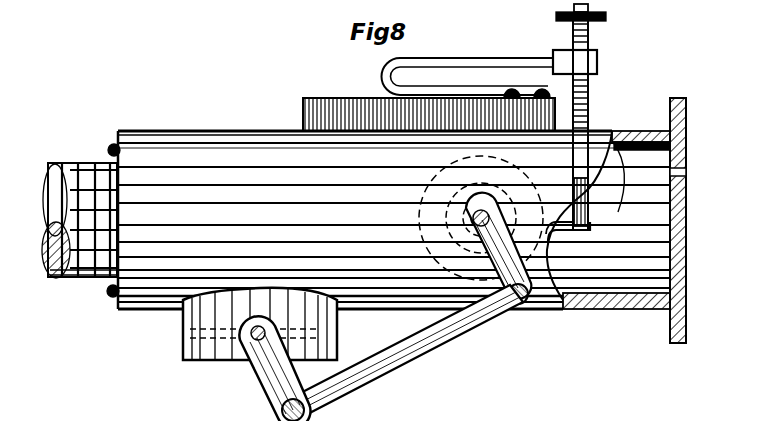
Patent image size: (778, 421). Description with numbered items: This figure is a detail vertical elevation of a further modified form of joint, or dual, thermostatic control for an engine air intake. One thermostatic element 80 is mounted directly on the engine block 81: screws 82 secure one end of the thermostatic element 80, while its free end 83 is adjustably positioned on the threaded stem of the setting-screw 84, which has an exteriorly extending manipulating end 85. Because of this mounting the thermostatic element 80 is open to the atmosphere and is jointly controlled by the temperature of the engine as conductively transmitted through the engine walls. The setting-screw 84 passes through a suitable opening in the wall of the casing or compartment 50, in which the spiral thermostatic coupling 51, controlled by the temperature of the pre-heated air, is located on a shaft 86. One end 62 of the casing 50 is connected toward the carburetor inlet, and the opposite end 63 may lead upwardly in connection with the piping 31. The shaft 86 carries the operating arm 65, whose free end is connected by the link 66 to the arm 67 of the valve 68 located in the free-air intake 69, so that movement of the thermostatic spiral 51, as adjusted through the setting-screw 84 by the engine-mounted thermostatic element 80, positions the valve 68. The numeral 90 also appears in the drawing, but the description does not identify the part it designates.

The piping 31 is at (82, 195).
The casing 50 is at (614, 132).
The spiral thermostatic coupling 51 is at (440, 230).
The end of the casing 62 is at (686, 134).
The opposite end of the casing 63 is at (119, 162).
The operating arm 65 is at (560, 267).
The link 66 is at (446, 338).
The arm of the valve 67 is at (276, 396).
The valve 68 is at (230, 355).
The free-air intake 69 is at (198, 358).
The thermostatic element 80 is at (456, 60).
The engine block 81 is at (370, 118).
The screws 82 is at (528, 92).
The free end of the thermostatic element 83 is at (556, 68).
The setting-screw 84 is at (592, 98).
The manipulating end 85 is at (590, 14).
The shaft 86 is at (445, 218).
The crank arm 90 is at (464, 420).